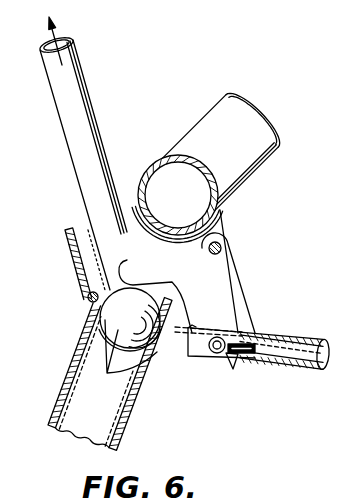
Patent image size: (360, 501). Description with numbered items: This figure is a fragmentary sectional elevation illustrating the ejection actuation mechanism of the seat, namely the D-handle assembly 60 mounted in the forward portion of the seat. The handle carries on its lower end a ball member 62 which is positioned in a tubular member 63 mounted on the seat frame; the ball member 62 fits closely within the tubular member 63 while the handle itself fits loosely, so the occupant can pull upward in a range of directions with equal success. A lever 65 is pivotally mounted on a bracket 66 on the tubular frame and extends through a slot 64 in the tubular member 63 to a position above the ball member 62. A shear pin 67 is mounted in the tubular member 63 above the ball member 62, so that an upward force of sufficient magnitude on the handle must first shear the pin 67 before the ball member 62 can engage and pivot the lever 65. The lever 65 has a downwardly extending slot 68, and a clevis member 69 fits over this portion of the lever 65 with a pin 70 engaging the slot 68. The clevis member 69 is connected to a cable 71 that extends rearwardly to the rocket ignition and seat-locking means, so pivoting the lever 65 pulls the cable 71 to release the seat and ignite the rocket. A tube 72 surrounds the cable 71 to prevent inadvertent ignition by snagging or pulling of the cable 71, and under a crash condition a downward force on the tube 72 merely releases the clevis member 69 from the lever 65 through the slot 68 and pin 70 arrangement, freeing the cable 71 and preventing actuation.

The D-handle assembly 60 is at (122, 173).
The ball member 62 is at (110, 322).
The tubular member 63 is at (78, 265).
The slot 64 is at (127, 260).
The lever 65 is at (212, 273).
The bracket 66 is at (238, 295).
The shear pin 67 is at (89, 297).
The slot 68 is at (231, 358).
The clevis member 69 is at (253, 353).
The pin 70 is at (196, 356).
The cable 71 is at (282, 347).
The tube 72 is at (308, 342).